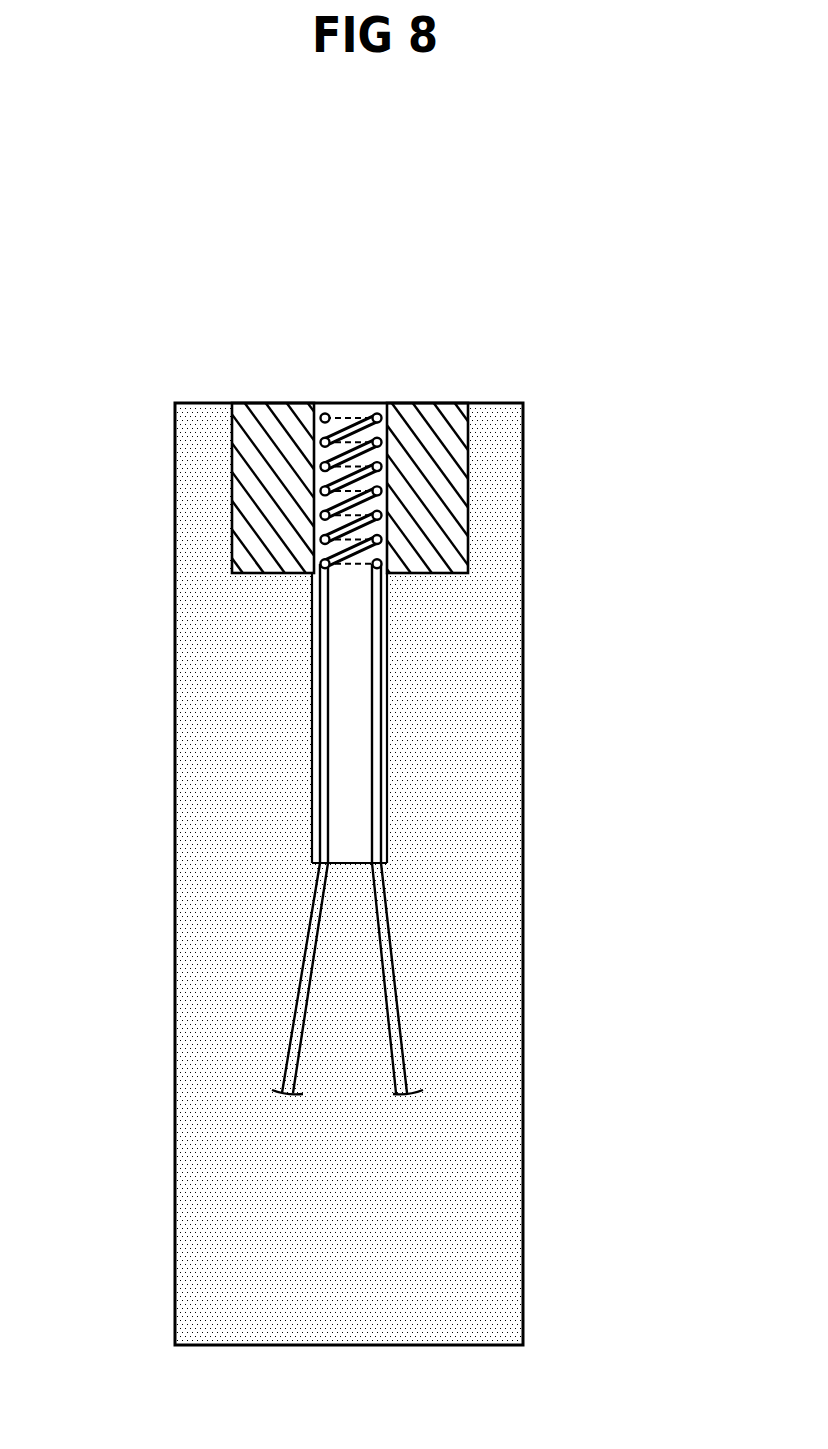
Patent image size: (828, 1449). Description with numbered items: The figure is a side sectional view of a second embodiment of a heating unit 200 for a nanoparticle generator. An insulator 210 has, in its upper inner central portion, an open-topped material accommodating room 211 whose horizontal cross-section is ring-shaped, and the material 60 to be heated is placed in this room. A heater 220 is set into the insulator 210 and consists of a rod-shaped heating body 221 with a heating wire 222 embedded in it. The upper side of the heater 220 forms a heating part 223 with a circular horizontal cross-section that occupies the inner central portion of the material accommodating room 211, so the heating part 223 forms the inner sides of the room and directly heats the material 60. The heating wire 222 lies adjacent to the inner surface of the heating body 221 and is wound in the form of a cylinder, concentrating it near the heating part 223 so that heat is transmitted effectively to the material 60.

The heating unit 200 is at (578, 432).
The insulator 210 is at (235, 771).
The material accommodating room 211 is at (279, 470).
The material 60 is at (426, 447).
The heater 220 is at (420, 706).
The heating body 221 is at (352, 673).
The heating wire 222 is at (398, 952).
The heating part 223 is at (380, 508).